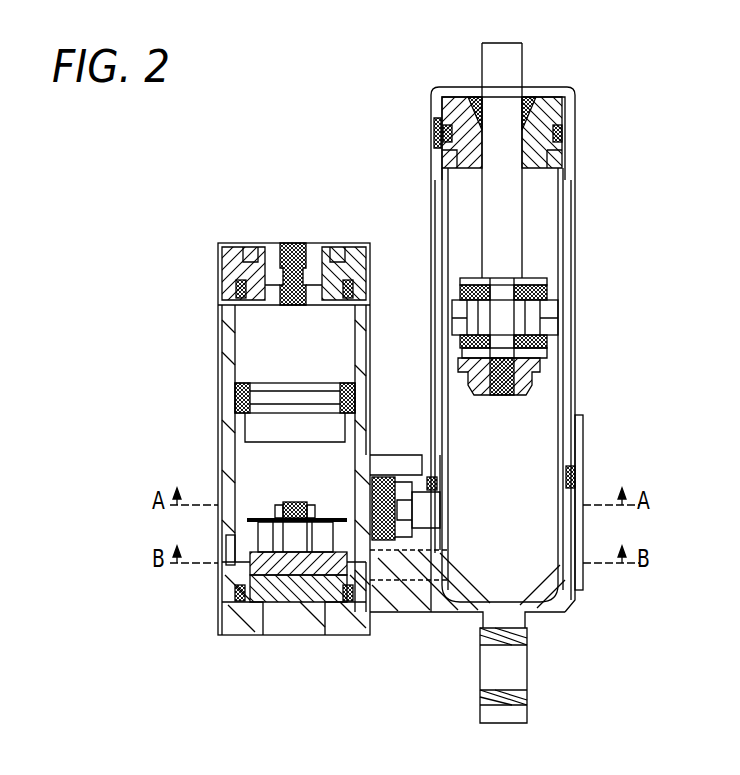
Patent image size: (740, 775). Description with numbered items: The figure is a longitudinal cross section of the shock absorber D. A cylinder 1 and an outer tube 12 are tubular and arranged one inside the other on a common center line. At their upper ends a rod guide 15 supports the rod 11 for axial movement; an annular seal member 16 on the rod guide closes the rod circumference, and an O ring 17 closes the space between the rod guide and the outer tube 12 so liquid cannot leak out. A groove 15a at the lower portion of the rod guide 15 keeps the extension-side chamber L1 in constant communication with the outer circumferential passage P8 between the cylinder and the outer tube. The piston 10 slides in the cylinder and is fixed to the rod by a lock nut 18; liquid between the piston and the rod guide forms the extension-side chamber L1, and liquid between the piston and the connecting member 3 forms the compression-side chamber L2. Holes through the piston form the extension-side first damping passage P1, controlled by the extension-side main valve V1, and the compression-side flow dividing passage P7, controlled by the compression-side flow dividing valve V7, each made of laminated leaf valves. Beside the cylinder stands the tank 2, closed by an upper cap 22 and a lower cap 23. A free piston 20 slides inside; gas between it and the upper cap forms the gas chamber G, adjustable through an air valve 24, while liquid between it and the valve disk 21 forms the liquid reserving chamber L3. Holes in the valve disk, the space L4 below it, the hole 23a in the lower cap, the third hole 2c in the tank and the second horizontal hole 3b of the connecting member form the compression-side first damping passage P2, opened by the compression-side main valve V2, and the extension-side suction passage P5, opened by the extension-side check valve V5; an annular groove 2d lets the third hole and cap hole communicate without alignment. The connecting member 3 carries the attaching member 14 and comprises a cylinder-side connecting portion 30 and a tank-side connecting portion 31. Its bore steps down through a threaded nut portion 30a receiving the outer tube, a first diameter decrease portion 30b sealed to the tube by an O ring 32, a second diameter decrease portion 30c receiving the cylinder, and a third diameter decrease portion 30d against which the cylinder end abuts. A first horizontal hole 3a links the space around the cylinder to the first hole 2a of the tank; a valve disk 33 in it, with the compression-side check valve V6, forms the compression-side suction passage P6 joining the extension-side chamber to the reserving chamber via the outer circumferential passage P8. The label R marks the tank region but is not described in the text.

The shock absorber D is at (584, 72).
The cylinder 1 is at (563, 190).
The tank 2 is at (218, 352).
The first hole 2a is at (352, 512).
The third hole 2c is at (383, 600).
The annular groove 2d is at (364, 636).
The connecting member 3 is at (571, 622).
The first horizontal hole 3a is at (442, 510).
The second horizontal hole 3b is at (435, 600).
The piston 10 is at (552, 316).
The rod 11 is at (519, 62).
The outer tube 12 is at (572, 228).
The attaching member 14 is at (528, 702).
The rod guide 15 is at (562, 112).
The groove 15a is at (443, 148).
The annular seal member 16 is at (472, 104).
The O ring 17 is at (436, 132).
The lock nut 18 is at (490, 397).
The free piston 20 is at (237, 412).
The valve disk 21 is at (228, 550).
The upper cap 22 is at (234, 243).
The lower cap 23 is at (240, 637).
The hole 23a is at (332, 606).
The air valve 24 is at (294, 243).
The cylinder-side connecting portion 30 is at (588, 438).
The nut portion 30a is at (584, 418).
The first diameter decrease portion 30b is at (585, 492).
The second diameter decrease portion 30c is at (584, 548).
The third diameter decrease portion 30d is at (584, 580).
The tank-side connecting portion 31 is at (432, 476).
The O ring 32 is at (583, 470).
The valve disk 33 is at (386, 476).
The extension-side chamber L1 is at (458, 202).
The compression-side chamber L2 is at (516, 480).
The liquid reserving chamber L3 is at (262, 462).
The space L4 is at (284, 673).
The gas chamber G is at (306, 355).
The reservoir chamber R is at (246, 330).
The extension-side first damping passage P1 is at (450, 326).
The compression-side first damping passage P2 is at (314, 600).
The extension-side suction passage P5 is at (272, 524).
The compression-side suction passage P6 is at (420, 455).
The compression-side flow dividing passage P7 is at (548, 340).
The outer circumferential passage P8 is at (444, 238).
The extension-side main valve V1 is at (470, 332).
The compression-side main valve V2 is at (330, 520).
The extension-side check valve V5 is at (236, 577).
The compression-side check valve V6 is at (402, 590).
The compression-side flow dividing valve V7 is at (548, 291).